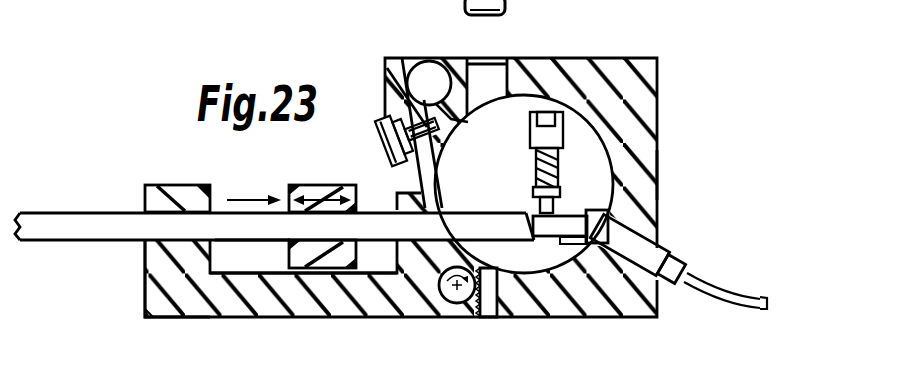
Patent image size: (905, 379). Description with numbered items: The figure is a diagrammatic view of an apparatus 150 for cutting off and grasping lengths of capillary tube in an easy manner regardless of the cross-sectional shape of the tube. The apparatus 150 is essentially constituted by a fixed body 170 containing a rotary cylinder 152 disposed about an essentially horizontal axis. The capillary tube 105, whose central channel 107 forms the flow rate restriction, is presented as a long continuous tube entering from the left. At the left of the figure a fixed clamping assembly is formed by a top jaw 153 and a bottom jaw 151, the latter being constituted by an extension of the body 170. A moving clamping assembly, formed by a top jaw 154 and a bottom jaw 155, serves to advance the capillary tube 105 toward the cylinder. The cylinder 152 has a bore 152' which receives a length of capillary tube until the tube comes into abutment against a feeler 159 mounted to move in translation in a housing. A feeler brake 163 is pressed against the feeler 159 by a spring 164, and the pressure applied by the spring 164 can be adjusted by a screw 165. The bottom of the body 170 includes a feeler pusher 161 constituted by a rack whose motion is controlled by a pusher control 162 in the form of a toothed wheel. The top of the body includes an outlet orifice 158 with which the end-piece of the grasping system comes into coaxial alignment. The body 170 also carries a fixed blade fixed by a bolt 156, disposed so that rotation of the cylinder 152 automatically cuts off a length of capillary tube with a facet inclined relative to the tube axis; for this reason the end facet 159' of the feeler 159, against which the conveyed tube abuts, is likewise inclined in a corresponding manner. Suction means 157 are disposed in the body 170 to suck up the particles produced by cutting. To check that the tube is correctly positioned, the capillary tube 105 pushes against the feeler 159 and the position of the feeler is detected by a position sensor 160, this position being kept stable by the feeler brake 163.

The capillary tube 105 is at (250, 228).
The central channel 107 is at (110, 220).
The apparatus 150 is at (377, 59).
The bottom jaw 151 is at (178, 275).
The rotary cylinder 152 is at (546, 137).
The bore 152' is at (525, 285).
The top jaw 153 is at (178, 185).
The top jaw 154 is at (317, 185).
The bottom jaw 155 is at (318, 252).
The bolt 156 is at (380, 142).
The suction means 157 is at (429, 80).
The outlet orifice 158 is at (500, 65).
The feeler 159 is at (617, 284).
The end facet 159' is at (566, 287).
The position sensor 160 is at (672, 252).
The feeler pusher 161 is at (489, 303).
The pusher control 162 is at (452, 296).
The feeler brake 163 is at (657, 175).
The spring 164 is at (580, 165).
The screw 165 is at (547, 112).
The fixed body 170 is at (145, 272).